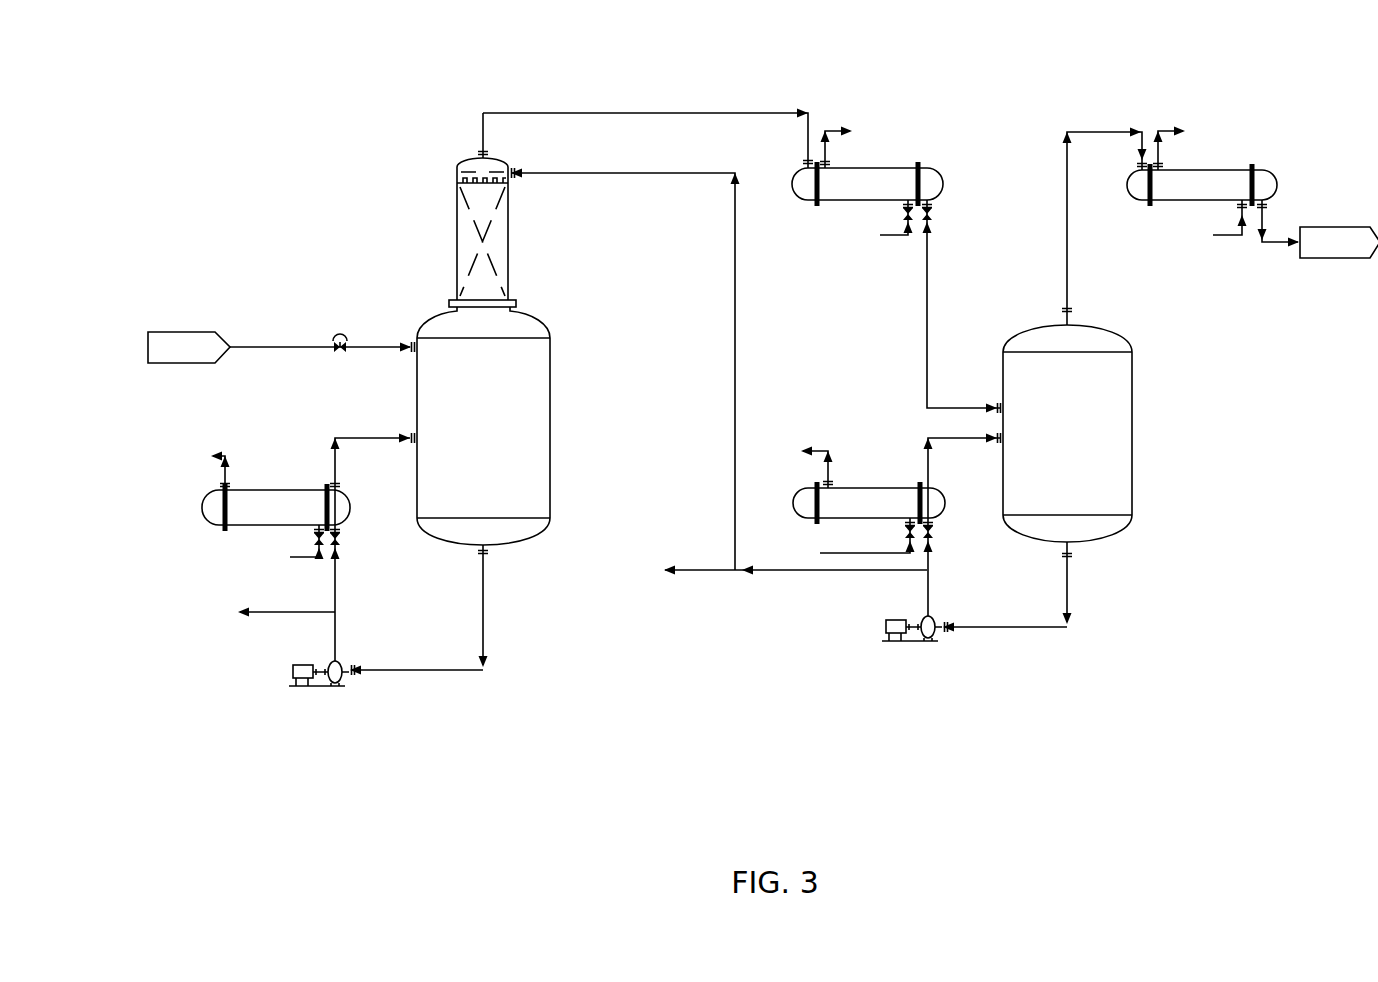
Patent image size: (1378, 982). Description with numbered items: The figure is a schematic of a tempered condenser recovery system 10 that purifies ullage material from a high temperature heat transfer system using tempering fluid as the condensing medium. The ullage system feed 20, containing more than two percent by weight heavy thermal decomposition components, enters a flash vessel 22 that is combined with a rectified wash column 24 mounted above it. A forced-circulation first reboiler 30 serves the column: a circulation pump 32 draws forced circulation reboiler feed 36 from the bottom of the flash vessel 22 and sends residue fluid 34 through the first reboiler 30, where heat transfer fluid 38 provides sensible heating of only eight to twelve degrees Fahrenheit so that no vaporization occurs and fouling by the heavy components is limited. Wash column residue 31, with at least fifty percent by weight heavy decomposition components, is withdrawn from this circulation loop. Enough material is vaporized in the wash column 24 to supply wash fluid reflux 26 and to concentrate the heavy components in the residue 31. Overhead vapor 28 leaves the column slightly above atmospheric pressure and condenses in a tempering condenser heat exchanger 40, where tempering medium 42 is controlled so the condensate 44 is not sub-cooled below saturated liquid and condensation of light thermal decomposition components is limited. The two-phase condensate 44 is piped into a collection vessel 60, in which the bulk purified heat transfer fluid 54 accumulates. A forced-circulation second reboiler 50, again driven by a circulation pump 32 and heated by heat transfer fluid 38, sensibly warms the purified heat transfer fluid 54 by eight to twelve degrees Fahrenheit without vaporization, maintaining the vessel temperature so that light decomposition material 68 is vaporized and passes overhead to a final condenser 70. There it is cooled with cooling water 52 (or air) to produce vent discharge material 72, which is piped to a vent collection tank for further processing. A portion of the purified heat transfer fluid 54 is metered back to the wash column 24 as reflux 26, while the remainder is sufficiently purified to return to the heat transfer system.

The recovery system 10 is at (395, 102).
The ullage system feed 20 is at (281, 347).
The flash vessel 22 is at (476, 423).
The wash column 24 is at (467, 210).
The reflux 26 is at (636, 369).
The overhead vapor 28 is at (648, 127).
The first reboiler 30 is at (276, 507).
The wash column residue 31 is at (272, 613).
The circulation pump 32 is at (635, 642).
The residue fluid 34 is at (372, 538).
The forced circulation reboiler feed 36 is at (432, 615).
The heat transfer fluid 38 is at (546, 495).
The heat exchanger 40 is at (867, 184).
The tempering medium 42 is at (866, 184).
The condensate 44 is at (946, 306).
The second reboiler 50 is at (869, 503).
The cooling water 52 is at (1200, 182).
The purified heat transfer fluid 54 is at (865, 532).
The collection vessel 60 is at (1067, 433).
The decomposition material 68 is at (1089, 227).
The final condenser 70 is at (1202, 185).
The vent discharge material 72 is at (1317, 229).